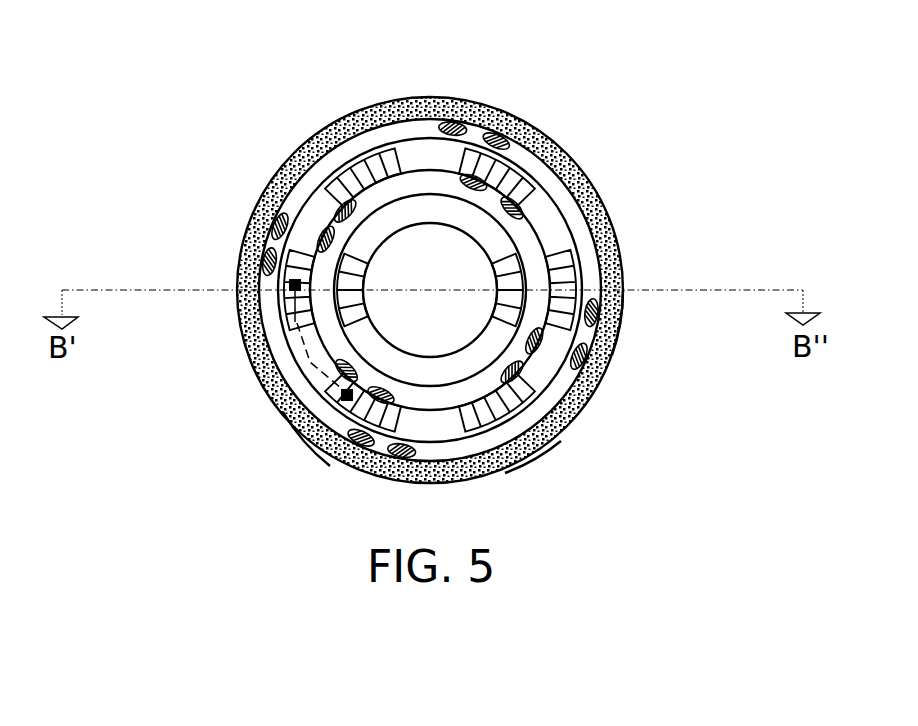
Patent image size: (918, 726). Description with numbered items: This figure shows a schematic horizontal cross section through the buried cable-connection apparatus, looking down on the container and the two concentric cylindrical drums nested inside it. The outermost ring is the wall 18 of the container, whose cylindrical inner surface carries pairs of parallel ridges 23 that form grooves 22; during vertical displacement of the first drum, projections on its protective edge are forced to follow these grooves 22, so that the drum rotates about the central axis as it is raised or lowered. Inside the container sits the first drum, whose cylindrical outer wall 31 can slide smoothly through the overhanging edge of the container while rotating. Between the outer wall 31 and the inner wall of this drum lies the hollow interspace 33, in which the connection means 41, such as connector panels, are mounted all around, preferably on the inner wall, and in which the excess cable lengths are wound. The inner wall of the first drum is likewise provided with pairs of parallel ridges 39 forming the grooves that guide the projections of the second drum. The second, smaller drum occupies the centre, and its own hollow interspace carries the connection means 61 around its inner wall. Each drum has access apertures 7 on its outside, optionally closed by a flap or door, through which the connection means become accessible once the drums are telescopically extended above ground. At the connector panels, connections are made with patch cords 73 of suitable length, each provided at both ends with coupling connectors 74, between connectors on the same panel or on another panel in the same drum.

The access apertures 7 is at (532, 450).
The wall of the container 18 is at (625, 262).
The grooves 22 is at (618, 343).
The parallel ridges 23 is at (240, 257).
The outer wall 31 is at (575, 232).
The hollow interspace 33 is at (548, 222).
The parallel ridges 39 is at (550, 345).
The connection means 41 is at (353, 160).
The connection means 61 is at (350, 298).
The patch cords 73 is at (312, 362).
The coupling connectors 74 is at (312, 438).